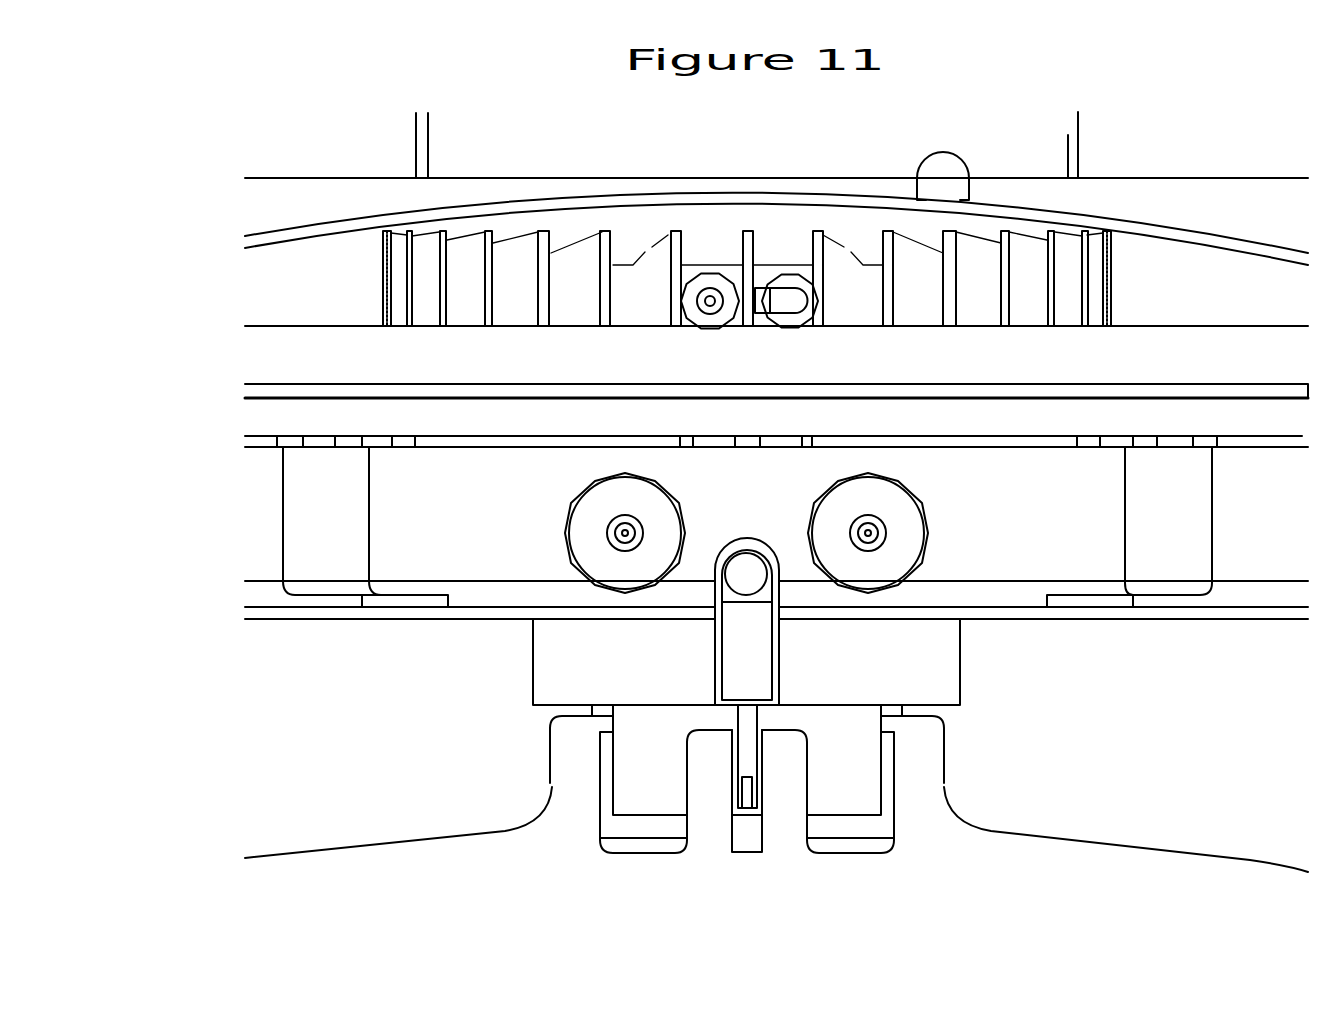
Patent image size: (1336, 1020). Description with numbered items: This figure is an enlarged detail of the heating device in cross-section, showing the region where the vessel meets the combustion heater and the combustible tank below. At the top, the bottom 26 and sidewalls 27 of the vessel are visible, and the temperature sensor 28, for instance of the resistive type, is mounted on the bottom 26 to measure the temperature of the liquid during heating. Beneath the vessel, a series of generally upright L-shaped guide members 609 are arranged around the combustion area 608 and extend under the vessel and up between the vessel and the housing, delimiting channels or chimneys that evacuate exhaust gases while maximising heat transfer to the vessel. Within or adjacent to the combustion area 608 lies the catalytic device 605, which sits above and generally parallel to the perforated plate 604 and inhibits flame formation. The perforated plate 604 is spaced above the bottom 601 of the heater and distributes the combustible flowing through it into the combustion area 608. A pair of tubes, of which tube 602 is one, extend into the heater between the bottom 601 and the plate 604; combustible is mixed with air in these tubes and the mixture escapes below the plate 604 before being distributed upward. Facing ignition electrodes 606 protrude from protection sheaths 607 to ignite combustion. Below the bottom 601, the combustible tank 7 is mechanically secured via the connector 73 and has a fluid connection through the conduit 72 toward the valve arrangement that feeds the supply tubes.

The bottom 26 is at (278, 238).
The sidewalls 27 is at (747, 145).
The temperature sensor 28 is at (945, 155).
The protection sheaths 607 is at (749, 260).
The ignition electrodes 606 is at (792, 302).
The guide members 609 is at (292, 287).
The catalytic device 605 is at (258, 390).
The perforated plate 604 is at (730, 479).
The combustion area 608 is at (557, 360).
The tube 602 is at (929, 542).
The bottom 601 is at (1073, 617).
The conduit 72 is at (740, 632).
The connector 73 is at (938, 645).
The combustible tank 7 is at (1157, 867).